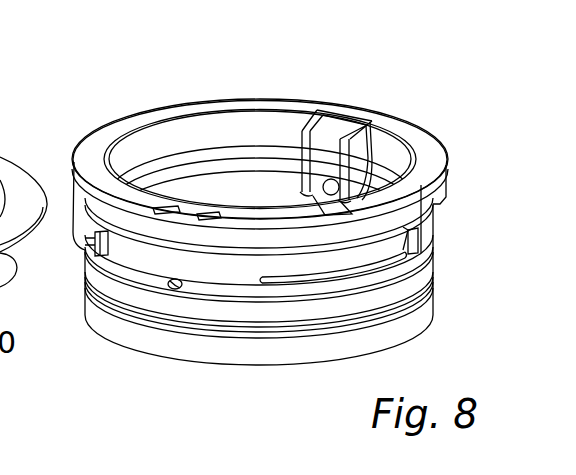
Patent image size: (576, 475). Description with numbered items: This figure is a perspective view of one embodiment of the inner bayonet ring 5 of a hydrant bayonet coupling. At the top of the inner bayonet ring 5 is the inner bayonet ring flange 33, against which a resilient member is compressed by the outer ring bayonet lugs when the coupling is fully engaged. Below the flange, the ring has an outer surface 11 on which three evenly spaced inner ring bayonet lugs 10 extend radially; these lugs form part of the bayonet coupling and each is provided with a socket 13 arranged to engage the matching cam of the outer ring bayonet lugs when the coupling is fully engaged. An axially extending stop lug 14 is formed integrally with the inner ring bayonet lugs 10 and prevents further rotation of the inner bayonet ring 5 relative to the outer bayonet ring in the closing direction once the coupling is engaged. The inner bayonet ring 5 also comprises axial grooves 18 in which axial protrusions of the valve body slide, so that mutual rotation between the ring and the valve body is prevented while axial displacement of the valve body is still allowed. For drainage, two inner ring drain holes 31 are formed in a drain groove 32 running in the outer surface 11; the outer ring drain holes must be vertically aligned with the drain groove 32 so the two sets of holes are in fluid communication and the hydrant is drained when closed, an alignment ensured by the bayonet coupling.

The inner bayonet ring 5 is at (78, 160).
The inner bayonet ring flange 33 is at (228, 153).
The inner ring bayonet lugs 10 is at (343, 275).
The outer surface 11 is at (130, 255).
The socket 13 is at (417, 305).
The stop lug 14 is at (427, 167).
The axial grooves 18 is at (331, 145).
The inner ring drain holes 31 is at (167, 282).
The drain groove 32 is at (227, 290).